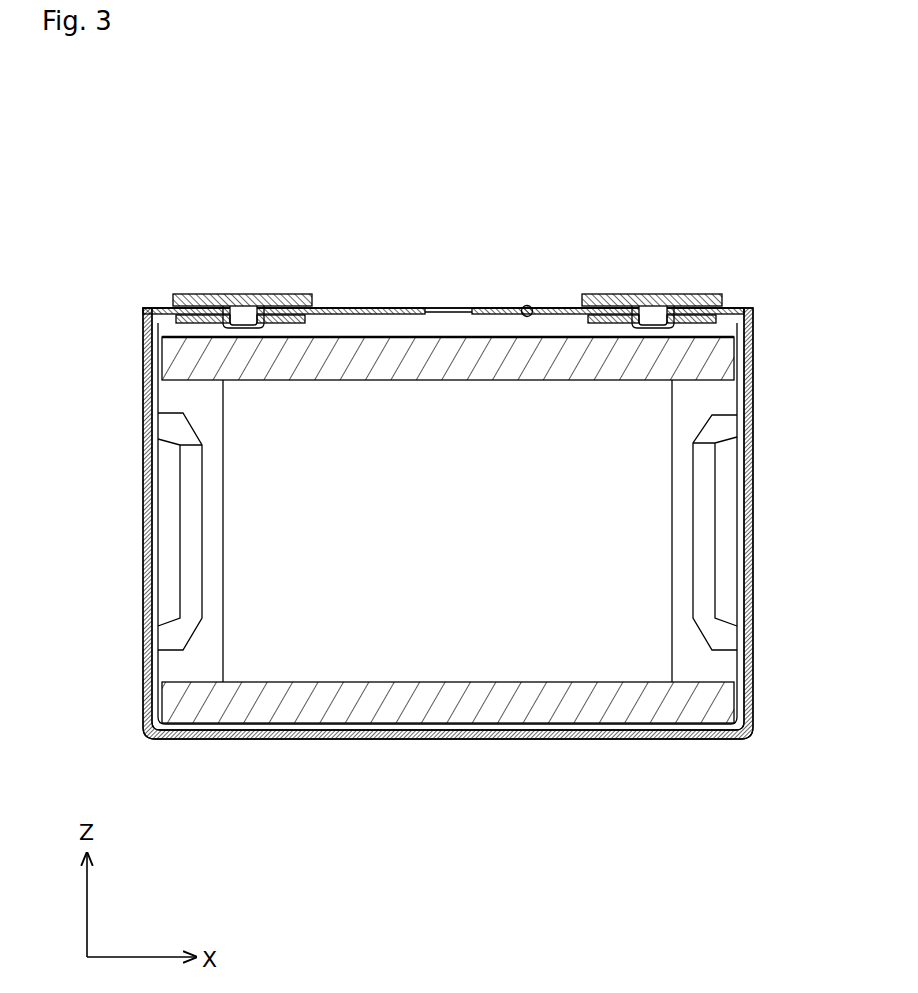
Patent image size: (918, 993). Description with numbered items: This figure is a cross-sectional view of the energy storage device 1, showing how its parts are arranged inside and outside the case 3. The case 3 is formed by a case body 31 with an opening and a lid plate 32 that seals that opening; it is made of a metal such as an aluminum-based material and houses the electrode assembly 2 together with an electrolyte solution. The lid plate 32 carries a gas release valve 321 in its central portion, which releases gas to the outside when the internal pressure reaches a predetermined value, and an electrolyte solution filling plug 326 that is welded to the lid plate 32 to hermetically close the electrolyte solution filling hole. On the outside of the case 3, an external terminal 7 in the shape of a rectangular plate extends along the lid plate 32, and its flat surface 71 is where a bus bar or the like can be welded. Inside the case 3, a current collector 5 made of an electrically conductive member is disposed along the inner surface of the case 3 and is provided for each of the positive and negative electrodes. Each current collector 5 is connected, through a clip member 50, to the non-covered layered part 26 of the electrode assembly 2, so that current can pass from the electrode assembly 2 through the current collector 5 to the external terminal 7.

The energy storage device 1 is at (752, 167).
The electrode assembly 2 is at (497, 729).
The case 3 is at (517, 474).
The case body 31 is at (756, 378).
The lid plate 32 is at (498, 272).
The gas release valve 321 is at (440, 304).
The electrolyte solution filling plug 326 is at (526, 303).
The current collector 5 is at (171, 578).
The clip member 50 is at (194, 493).
The external terminal 7 is at (228, 292).
The surface 71 is at (270, 293).
The non-covered layered part 26 is at (207, 660).